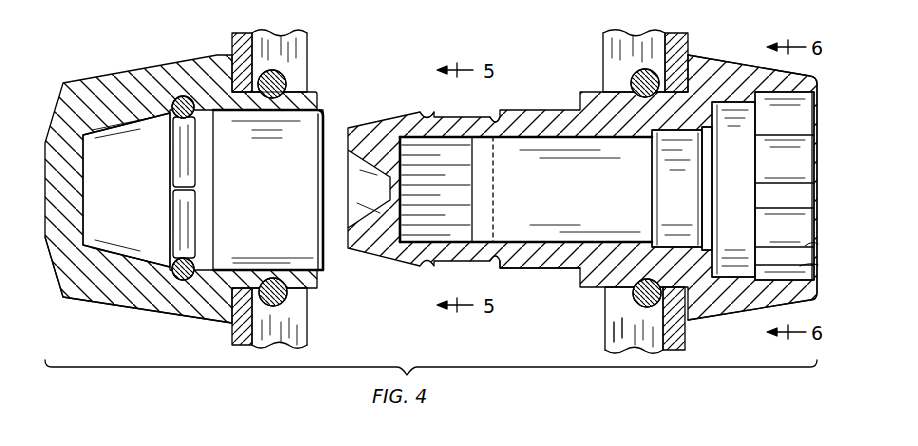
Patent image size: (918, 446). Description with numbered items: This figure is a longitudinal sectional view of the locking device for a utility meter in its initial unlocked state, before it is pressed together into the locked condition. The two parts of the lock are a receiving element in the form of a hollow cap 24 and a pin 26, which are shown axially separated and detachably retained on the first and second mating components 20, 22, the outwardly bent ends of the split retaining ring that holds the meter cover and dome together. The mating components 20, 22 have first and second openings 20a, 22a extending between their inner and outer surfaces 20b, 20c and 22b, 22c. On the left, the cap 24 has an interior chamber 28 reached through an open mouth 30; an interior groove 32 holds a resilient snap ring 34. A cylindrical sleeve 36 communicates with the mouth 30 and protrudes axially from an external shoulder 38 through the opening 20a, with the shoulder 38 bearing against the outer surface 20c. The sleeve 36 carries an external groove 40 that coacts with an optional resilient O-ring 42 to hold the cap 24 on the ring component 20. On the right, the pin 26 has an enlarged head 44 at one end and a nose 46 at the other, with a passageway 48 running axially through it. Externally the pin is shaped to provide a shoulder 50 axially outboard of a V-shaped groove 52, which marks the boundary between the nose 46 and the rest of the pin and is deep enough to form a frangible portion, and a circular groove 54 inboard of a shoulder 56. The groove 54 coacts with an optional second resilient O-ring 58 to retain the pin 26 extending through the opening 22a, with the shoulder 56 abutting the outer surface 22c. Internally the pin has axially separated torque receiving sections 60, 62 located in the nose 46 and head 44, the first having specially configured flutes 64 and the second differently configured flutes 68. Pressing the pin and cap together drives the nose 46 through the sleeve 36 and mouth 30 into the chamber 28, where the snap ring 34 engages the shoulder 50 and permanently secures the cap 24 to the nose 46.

The first mating component 20 is at (283, 350).
The first opening 20a is at (253, 287).
The inner surface 20b is at (303, 330).
The outer surface 20c is at (233, 336).
The second mating component 22 is at (612, 345).
The second opening 22a is at (682, 256).
The inner surface 22b is at (630, 319).
The outer surface 22c is at (687, 337).
The hollow cap 24 is at (100, 302).
The pin 26 is at (543, 271).
The interior chamber 28 is at (140, 203).
The open mouth 30 is at (218, 155).
The interior groove 32 is at (205, 262).
The resilient snap ring 34 is at (190, 170).
The cylindrical sleeve 36 is at (322, 94).
The external shoulder 38 is at (240, 63).
The groove 40 is at (277, 98).
The resilient O-ring 42 is at (280, 76).
The enlarged head 44 is at (740, 67).
The nose 46 is at (477, 118).
The passageway 48 is at (553, 240).
The shoulder 50 is at (432, 117).
The V-shaped groove 52 is at (497, 120).
The circular groove 54 is at (640, 100).
The shoulder 56 is at (688, 58).
The second resilient O-ring 58 is at (625, 62).
The torque receiving section 60 is at (470, 185).
The torque receiving section 62 is at (789, 198).
The flutes 64 is at (455, 213).
The flutes 68 is at (805, 246).